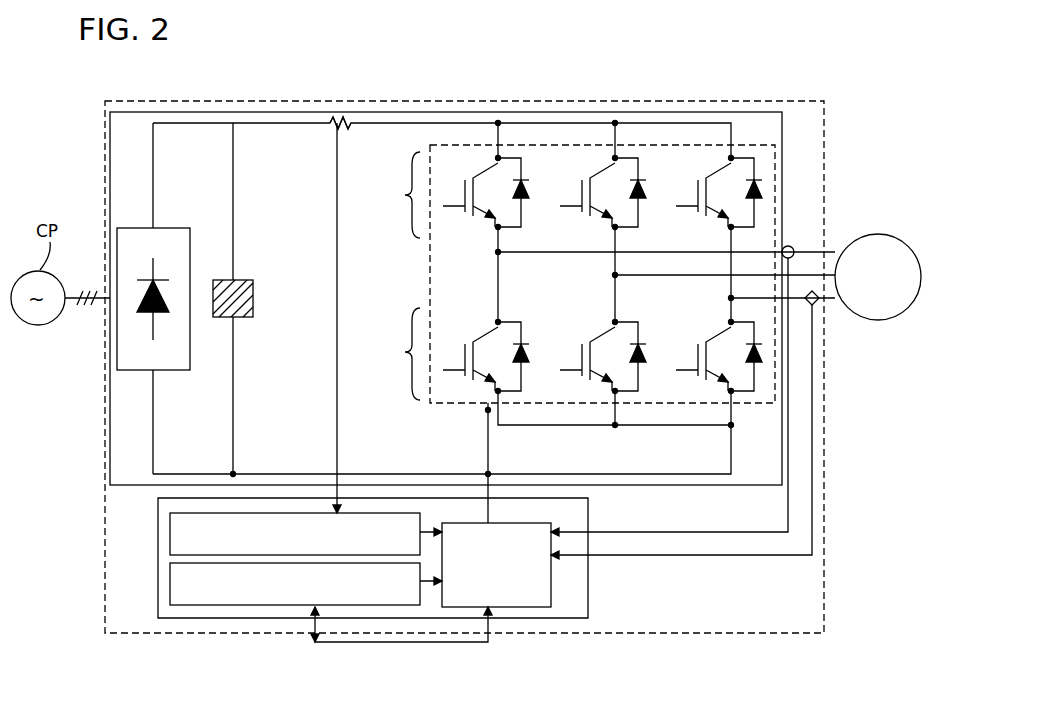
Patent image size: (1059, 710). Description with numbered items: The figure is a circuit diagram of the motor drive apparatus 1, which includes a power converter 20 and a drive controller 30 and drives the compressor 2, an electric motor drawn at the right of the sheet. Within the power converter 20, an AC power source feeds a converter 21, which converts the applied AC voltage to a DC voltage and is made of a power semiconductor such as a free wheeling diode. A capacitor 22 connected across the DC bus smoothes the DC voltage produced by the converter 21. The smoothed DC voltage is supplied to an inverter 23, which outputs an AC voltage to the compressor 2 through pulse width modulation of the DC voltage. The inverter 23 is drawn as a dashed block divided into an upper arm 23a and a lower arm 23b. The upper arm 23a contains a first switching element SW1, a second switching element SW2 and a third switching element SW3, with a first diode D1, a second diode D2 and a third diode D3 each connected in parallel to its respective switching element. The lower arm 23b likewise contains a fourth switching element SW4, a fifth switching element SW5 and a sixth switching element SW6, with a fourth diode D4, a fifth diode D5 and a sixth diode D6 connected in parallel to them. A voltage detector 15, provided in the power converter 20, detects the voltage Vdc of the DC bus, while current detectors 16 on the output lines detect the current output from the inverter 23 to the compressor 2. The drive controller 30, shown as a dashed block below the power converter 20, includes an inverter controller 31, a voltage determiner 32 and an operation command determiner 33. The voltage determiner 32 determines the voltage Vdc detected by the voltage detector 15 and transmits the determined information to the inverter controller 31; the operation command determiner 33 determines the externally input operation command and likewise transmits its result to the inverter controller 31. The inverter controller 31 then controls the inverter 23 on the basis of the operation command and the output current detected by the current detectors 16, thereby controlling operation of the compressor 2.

The motor drive apparatus 1 is at (777, 100).
The compressor 2 is at (873, 233).
The voltage detector 15 is at (333, 128).
The current detectors 16 is at (790, 245).
The power converter 20 is at (143, 493).
The converter 21 is at (176, 226).
The capacitor 22 is at (245, 278).
The inverter 23 is at (428, 270).
The upper arm 23a is at (572, 210).
The lower arm 23b is at (571, 344).
The drive controller 30 is at (588, 592).
The inverter controller 31 is at (552, 524).
The voltage determiner 32 is at (170, 555).
The operation command determiner 33 is at (170, 595).
The first switching element SW1 is at (480, 222).
The second switching element SW2 is at (596, 222).
The third switching element SW3 is at (710, 222).
The fourth switching element SW4 is at (476, 332).
The fifth switching element SW5 is at (593, 332).
The sixth switching element SW6 is at (708, 332).
The first diode D1 is at (525, 202).
The second diode D2 is at (642, 202).
The third diode D3 is at (758, 202).
The fourth diode D4 is at (528, 335).
The fifth diode D5 is at (645, 335).
The sixth diode D6 is at (757, 335).